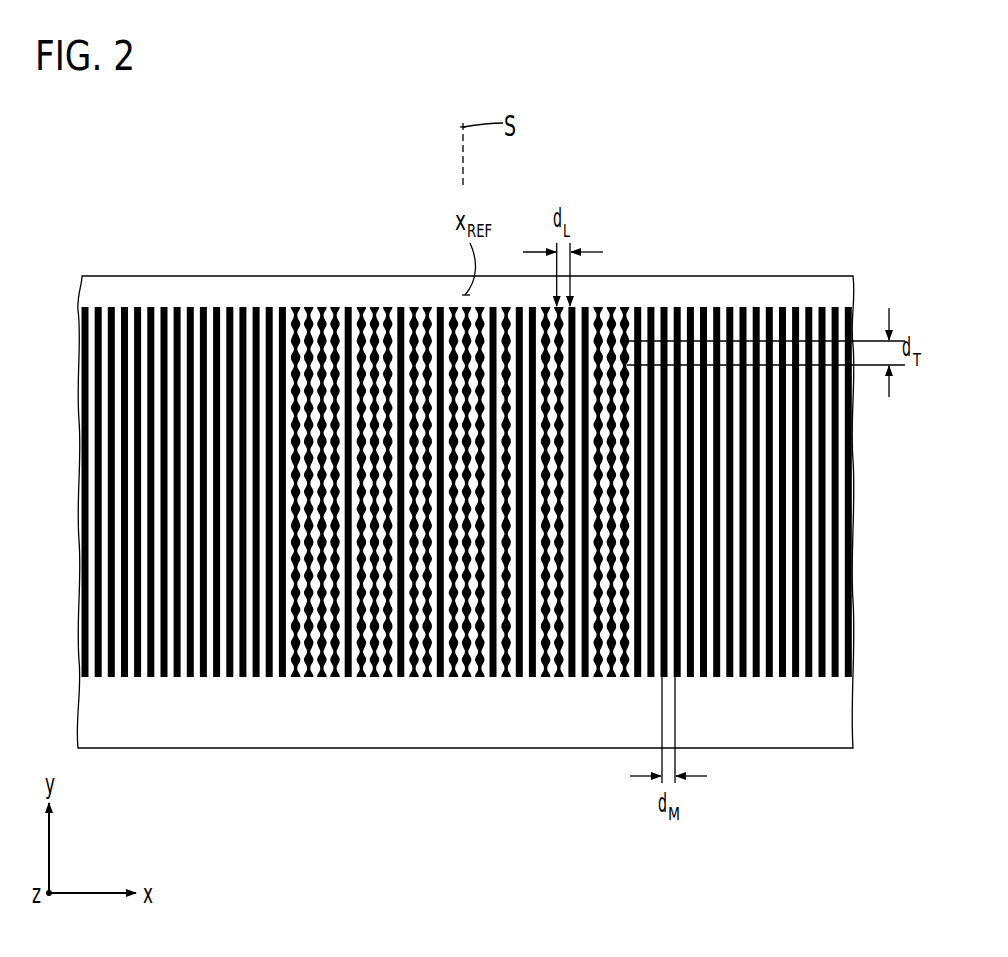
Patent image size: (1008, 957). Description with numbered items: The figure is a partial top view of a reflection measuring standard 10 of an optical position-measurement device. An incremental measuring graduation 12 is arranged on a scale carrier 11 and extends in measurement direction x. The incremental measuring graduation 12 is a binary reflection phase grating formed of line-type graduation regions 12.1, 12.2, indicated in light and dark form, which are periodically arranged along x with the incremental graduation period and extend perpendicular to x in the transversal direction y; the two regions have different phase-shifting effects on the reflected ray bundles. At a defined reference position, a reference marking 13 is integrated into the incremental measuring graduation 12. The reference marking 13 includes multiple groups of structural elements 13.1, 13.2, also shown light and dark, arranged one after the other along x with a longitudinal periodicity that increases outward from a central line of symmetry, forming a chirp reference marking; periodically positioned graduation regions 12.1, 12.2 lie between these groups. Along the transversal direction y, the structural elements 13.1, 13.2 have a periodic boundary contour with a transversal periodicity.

The reflection measuring standard 10 is at (453, 257).
The scale carrier 11 is at (672, 290).
The incremental measuring graduation 12 is at (72, 343).
The graduation region 12.1 is at (128, 310).
The graduation region 12.2 is at (127, 310).
The reference marking 13 is at (634, 680).
The structural element 13.1 is at (360, 667).
The structural element 13.2 is at (380, 667).